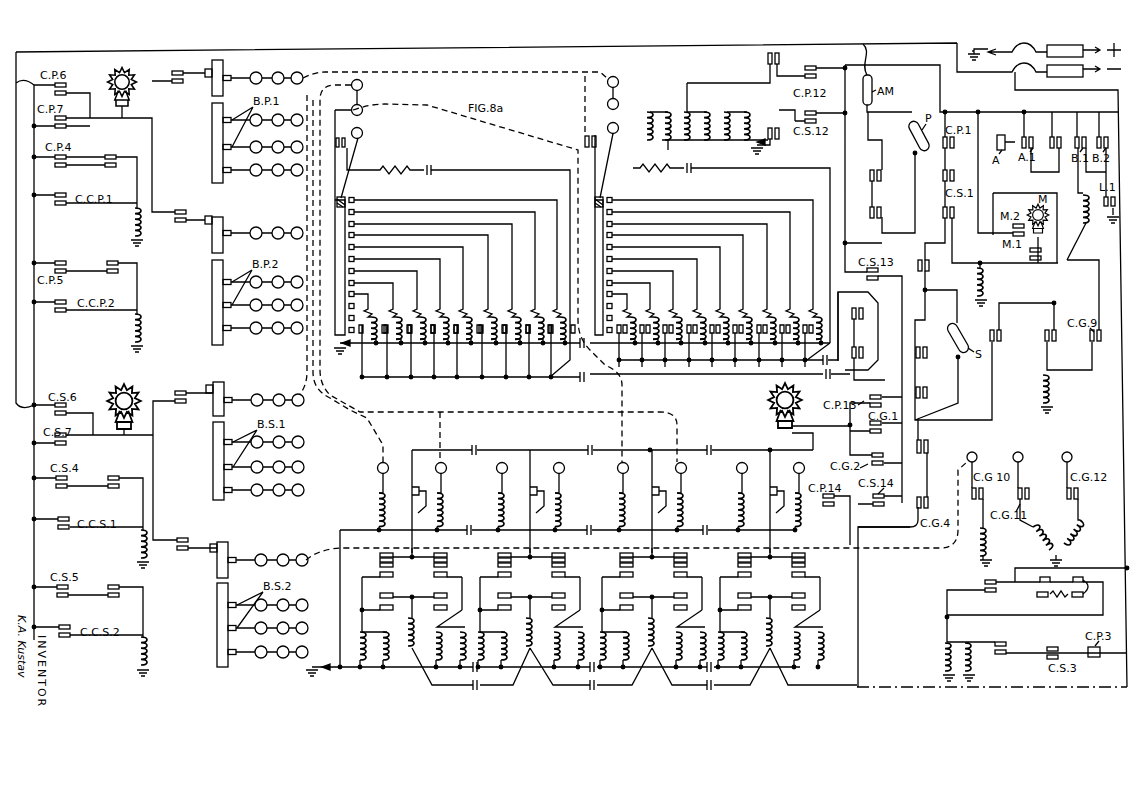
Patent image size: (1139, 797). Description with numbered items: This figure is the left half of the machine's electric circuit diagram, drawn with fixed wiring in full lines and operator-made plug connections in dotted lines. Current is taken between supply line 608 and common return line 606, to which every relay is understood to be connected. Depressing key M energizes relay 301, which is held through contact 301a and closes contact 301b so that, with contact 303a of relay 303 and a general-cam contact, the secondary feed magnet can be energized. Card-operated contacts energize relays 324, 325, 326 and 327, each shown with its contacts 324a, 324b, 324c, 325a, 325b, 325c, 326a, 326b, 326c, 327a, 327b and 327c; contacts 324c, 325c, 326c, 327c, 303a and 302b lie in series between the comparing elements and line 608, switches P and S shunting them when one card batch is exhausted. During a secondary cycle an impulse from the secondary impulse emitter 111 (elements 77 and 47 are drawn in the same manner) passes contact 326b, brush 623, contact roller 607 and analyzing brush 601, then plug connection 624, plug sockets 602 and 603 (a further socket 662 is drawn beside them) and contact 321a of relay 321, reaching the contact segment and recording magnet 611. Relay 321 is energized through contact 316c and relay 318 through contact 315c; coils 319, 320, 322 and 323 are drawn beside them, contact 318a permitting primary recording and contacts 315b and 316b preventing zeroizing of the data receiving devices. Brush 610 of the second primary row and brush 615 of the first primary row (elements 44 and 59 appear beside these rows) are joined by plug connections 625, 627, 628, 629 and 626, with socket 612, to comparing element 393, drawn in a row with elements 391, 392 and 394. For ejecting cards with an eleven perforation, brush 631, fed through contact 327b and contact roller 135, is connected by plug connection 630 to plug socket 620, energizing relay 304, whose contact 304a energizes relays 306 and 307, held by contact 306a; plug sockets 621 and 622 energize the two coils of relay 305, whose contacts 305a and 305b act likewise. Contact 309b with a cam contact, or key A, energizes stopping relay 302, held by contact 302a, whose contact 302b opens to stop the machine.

The relay bar 44 is at (212, 157).
The lamp 47 is at (773, 410).
The relay bar 59 is at (212, 305).
The lamp 77 is at (136, 79).
The secondary impulse emitter 111 is at (136, 397).
The contact roller 135 is at (217, 633).
The relay 301 is at (987, 287).
The relay contact 301a is at (948, 223).
The relay contact 301b is at (994, 332).
The relay 302 is at (1043, 390).
The relay contact 302a is at (1047, 332).
The relay contact 302b is at (933, 259).
The relay 303 is at (1083, 250).
The relay contact 303a is at (935, 443).
The relay 304 is at (978, 545).
The relay contact 304a is at (984, 585).
The relay 305 is at (1041, 542).
The relay contact 305a is at (1038, 591).
The relay contact 305b is at (1076, 597).
The relay 306 is at (945, 665).
The relay contact 306a is at (1010, 641).
The relay 307 is at (974, 668).
The relay contact 309b is at (1059, 137).
The relay contact 315b is at (866, 368).
The relay contact 315c is at (766, 66).
The relay contact 316b is at (856, 320).
The relay contact 316c is at (784, 146).
The relay 318 is at (650, 114).
The relay contact 318a is at (347, 152).
The coil 319 is at (668, 144).
The coil 320 is at (687, 142).
The relay 321 is at (708, 113).
The relay contact 321a is at (584, 142).
The coil 322 is at (727, 142).
The coil 323 is at (751, 113).
The relay 324 is at (134, 222).
The relay contact 324a is at (102, 157).
The relay contact 324b is at (189, 82).
The relay contact 324c is at (864, 169).
The relay 325 is at (134, 332).
The relay contact 325a is at (104, 262).
The relay contact 325b is at (176, 224).
The relay contact 325c is at (880, 203).
The relay 326 is at (140, 550).
The relay contact 326a is at (105, 478).
The relay contact 326b is at (186, 402).
The relay contact 326c is at (930, 346).
The relay 327 is at (140, 658).
The relay contact 327a is at (105, 587).
The relay contact 327b is at (176, 550).
The relay contact 327c is at (924, 388).
The relay unit 391 is at (412, 608).
The relay unit 392 is at (530, 608).
The comparing element 393 is at (652, 608).
The relay unit 394 is at (770, 608).
The analyzing brush 601 is at (230, 398).
The plug socket 602 is at (617, 81).
The plug socket 603 is at (606, 102).
The line 606 is at (990, 48).
The contact roller 607 is at (213, 449).
The line 608 is at (1003, 74).
The analyzing brush 610 is at (224, 234).
The recording magnet 611 is at (660, 303).
The terminal 612 is at (361, 137).
The analyzing brush 615 is at (224, 77).
The plug socket 620 is at (978, 449).
The plug socket 621 is at (1018, 452).
The plug socket 622 is at (1067, 452).
The brush 623 is at (206, 388).
The plug connection 624 is at (551, 74).
The plug connection 625 is at (346, 88).
The plug connection 626 is at (303, 192).
The plug connection 627 is at (428, 108).
The plug connection 628 is at (581, 127).
The plug connection 629 is at (362, 118).
The plug connection 630 is at (344, 552).
The analyzing brush 631 is at (231, 557).
The terminal 662 is at (612, 136).